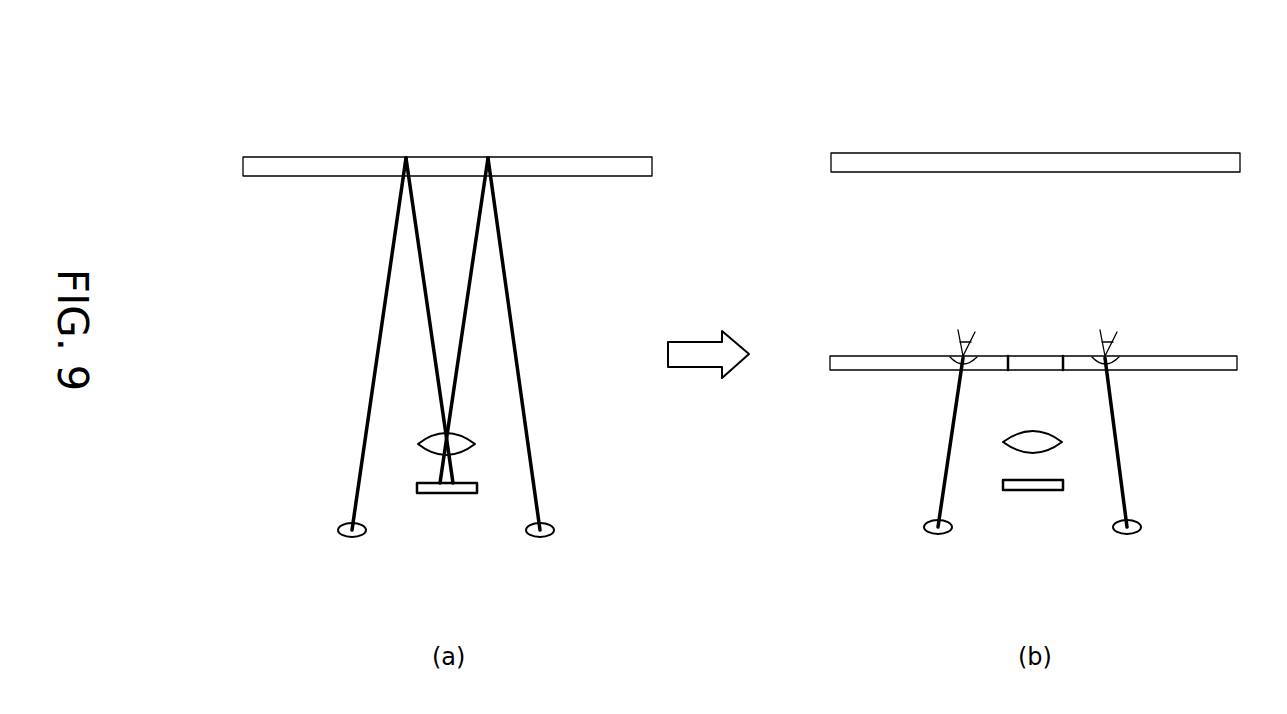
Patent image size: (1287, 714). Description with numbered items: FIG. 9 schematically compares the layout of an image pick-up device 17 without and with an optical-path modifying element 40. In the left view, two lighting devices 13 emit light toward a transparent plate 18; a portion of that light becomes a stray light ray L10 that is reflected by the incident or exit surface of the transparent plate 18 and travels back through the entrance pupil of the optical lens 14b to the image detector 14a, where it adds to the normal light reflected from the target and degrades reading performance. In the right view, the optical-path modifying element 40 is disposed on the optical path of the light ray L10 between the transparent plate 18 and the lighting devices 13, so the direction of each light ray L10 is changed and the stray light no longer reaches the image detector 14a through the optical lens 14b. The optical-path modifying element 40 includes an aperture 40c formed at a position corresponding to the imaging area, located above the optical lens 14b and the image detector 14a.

The image pick-up device 17 is at (738, 142).
The transparent plate 18 is at (627, 177).
The lighting device 13 is at (351, 539).
The image detector 14a is at (433, 495).
The optical lens 14b is at (460, 445).
The light ray L10 is at (377, 337).
The optical-path modifying element 40 is at (1033, 321).
The aperture 40c is at (1040, 356).